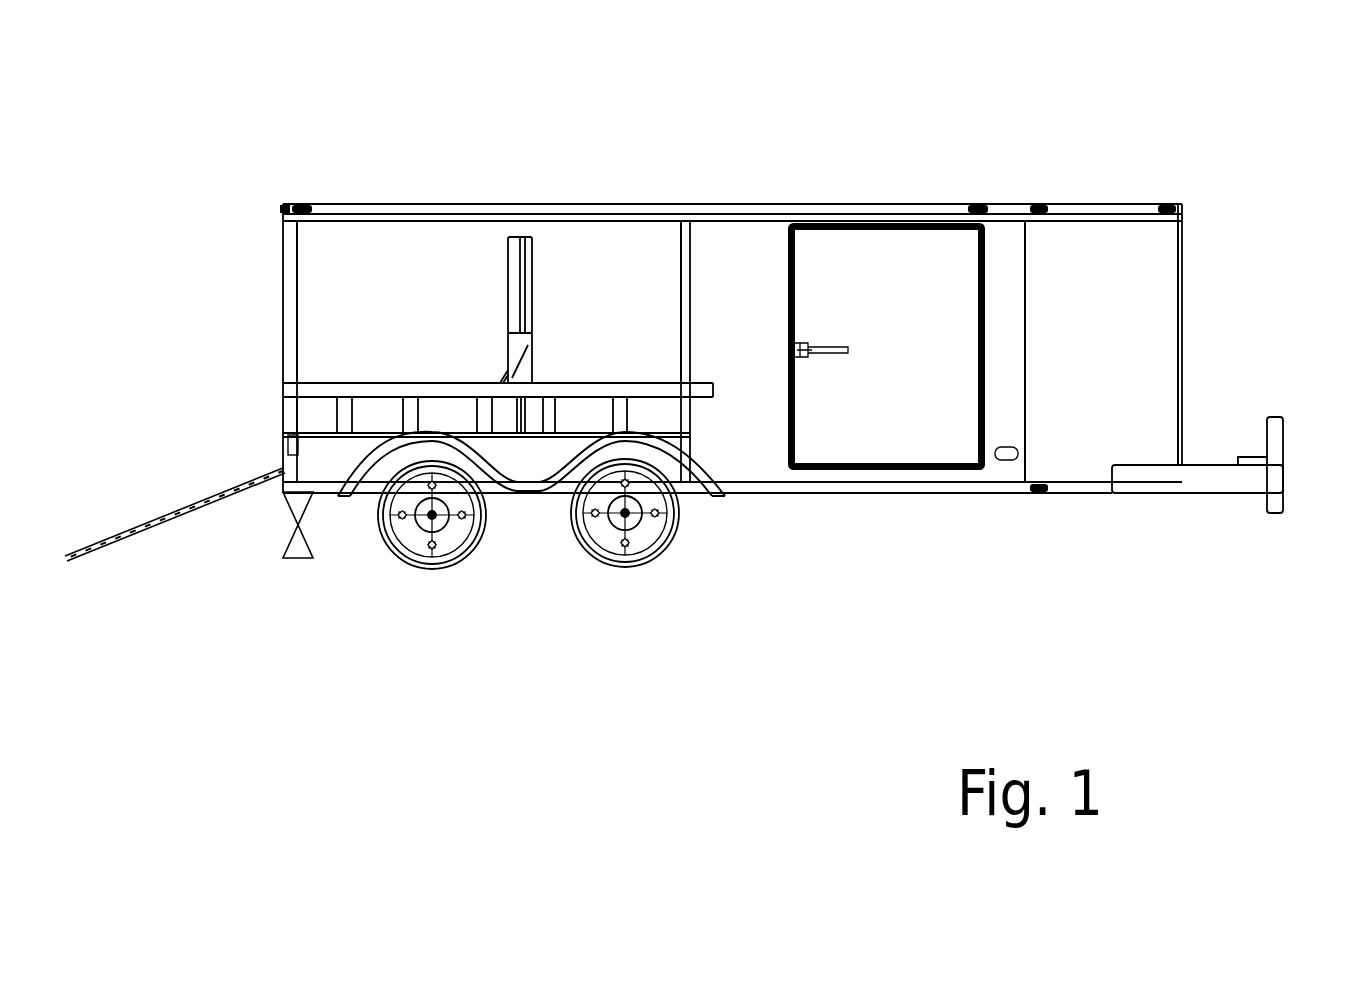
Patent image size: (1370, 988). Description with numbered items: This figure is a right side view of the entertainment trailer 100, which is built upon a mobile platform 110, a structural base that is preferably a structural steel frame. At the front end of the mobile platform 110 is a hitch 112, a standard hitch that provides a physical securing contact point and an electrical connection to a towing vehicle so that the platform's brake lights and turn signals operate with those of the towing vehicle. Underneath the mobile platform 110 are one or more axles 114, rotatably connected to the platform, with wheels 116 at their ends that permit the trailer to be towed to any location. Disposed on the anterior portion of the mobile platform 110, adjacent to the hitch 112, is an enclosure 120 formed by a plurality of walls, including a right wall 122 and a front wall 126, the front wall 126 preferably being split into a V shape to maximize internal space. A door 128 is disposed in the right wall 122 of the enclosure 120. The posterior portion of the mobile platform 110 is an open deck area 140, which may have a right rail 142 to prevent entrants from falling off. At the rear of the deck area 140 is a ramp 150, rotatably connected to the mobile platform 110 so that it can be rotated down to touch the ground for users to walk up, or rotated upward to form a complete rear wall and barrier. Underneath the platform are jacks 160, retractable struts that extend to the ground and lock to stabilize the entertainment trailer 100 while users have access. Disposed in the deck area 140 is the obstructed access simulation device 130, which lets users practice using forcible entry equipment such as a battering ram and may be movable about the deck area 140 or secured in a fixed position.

The entertainment trailer 100 is at (708, 96).
The mobile platform 110 is at (1201, 499).
The hitch 112 is at (1273, 408).
The axles 114 is at (639, 534).
The wheels 116 is at (449, 572).
The enclosure 120 is at (739, 196).
The right wall 122 is at (746, 472).
The front wall 126 is at (1086, 457).
The door 128 is at (889, 474).
The obstructed access simulation device 130 is at (506, 229).
The deck area 140 is at (563, 236).
The right rail 142 is at (344, 380).
The ramp 150 is at (101, 486).
The jacks 160 is at (293, 565).